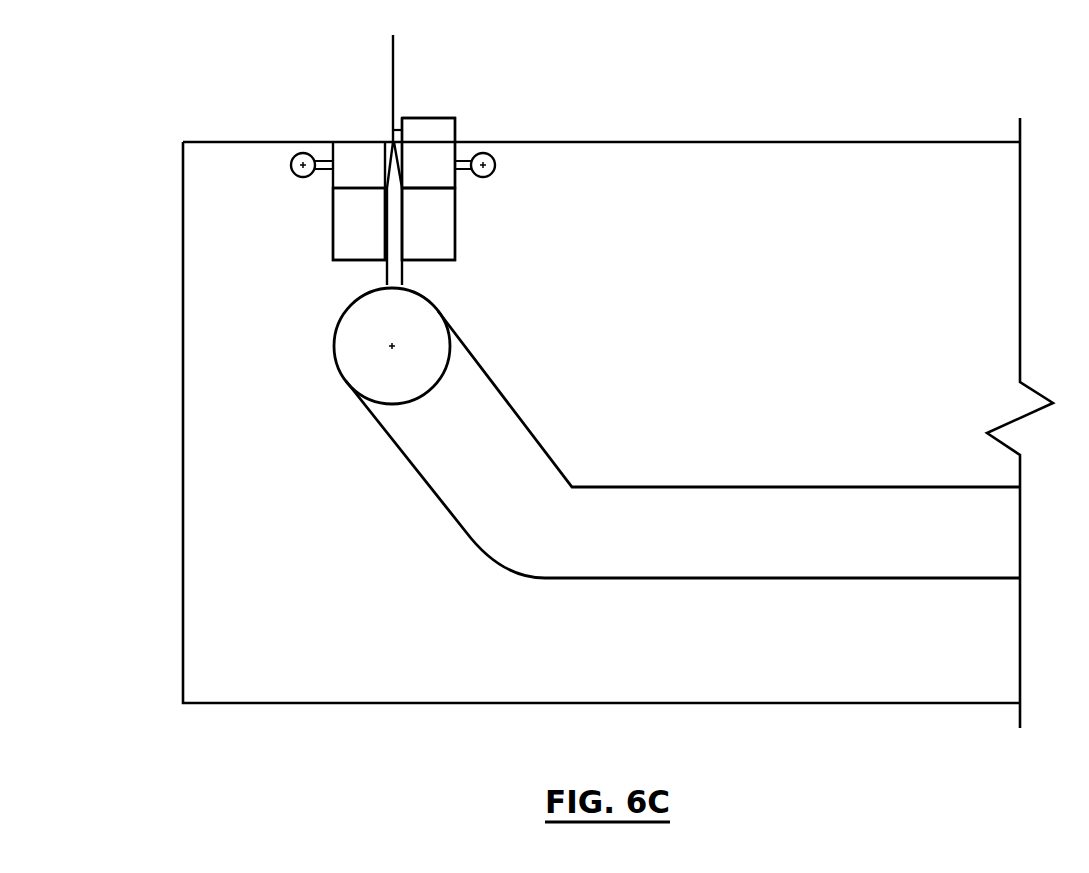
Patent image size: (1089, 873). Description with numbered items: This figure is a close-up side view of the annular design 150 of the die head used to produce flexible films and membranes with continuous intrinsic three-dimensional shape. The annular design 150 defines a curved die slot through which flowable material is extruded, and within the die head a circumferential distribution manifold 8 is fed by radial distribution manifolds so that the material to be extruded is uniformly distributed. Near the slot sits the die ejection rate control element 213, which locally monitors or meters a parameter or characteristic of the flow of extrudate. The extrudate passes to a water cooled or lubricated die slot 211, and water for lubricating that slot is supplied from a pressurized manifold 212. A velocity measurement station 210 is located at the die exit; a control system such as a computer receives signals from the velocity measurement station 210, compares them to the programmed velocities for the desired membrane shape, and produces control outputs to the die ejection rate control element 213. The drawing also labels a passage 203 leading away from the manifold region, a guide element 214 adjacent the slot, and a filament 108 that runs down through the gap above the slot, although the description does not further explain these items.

The annular design die head 150 is at (183, 558).
The channel 203 is at (764, 487).
The circumferential distribution manifold 8 is at (335, 330).
The velocity measurement station 210 is at (456, 110).
The lubricated die slot 211 is at (432, 158).
The pressurized manifold 212 is at (497, 167).
The die ejection rate control element 213 is at (455, 218).
The guide needle 214 is at (403, 273).
The fiber 108 is at (388, 135).